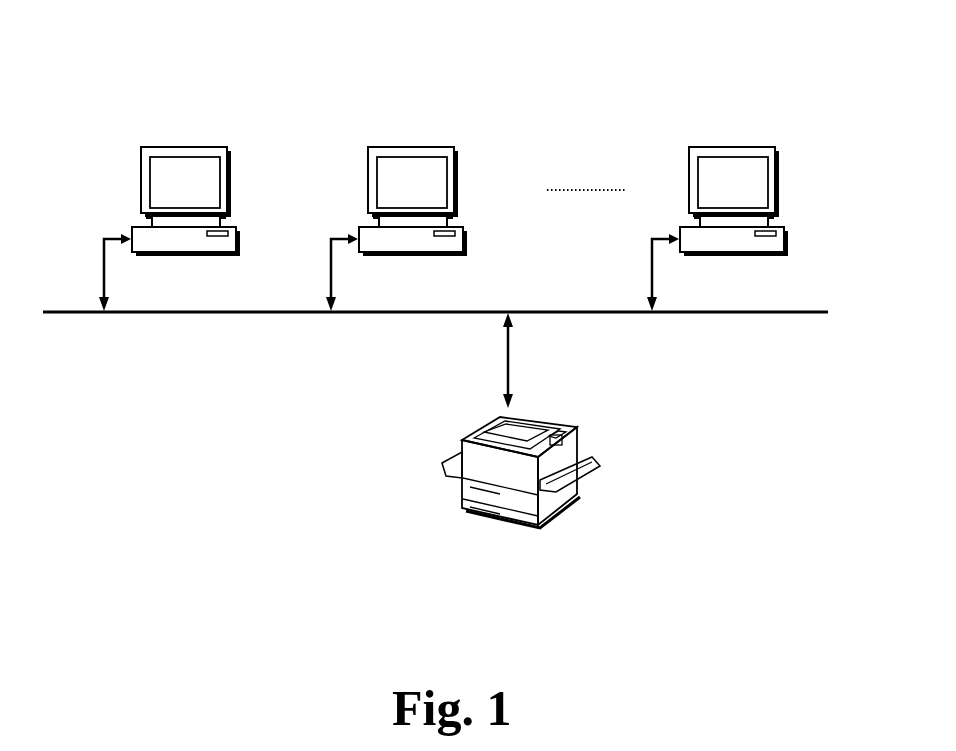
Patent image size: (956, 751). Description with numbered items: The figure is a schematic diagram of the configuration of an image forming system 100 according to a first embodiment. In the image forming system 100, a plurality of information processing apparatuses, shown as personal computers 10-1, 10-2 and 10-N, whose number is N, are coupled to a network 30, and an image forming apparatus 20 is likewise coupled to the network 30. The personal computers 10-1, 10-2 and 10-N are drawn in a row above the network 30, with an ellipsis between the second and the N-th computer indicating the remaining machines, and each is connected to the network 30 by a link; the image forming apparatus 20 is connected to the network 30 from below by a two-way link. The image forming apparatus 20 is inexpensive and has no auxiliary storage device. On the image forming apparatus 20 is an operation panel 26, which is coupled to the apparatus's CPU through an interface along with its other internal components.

The image forming system 100 is at (545, 99).
The personal computer 10-1 is at (237, 227).
The personal computer 10-2 is at (464, 227).
The personal computer 10-N is at (785, 227).
The network 30 is at (380, 313).
The image forming apparatus 20 is at (525, 412).
The operation panel 26 is at (563, 421).